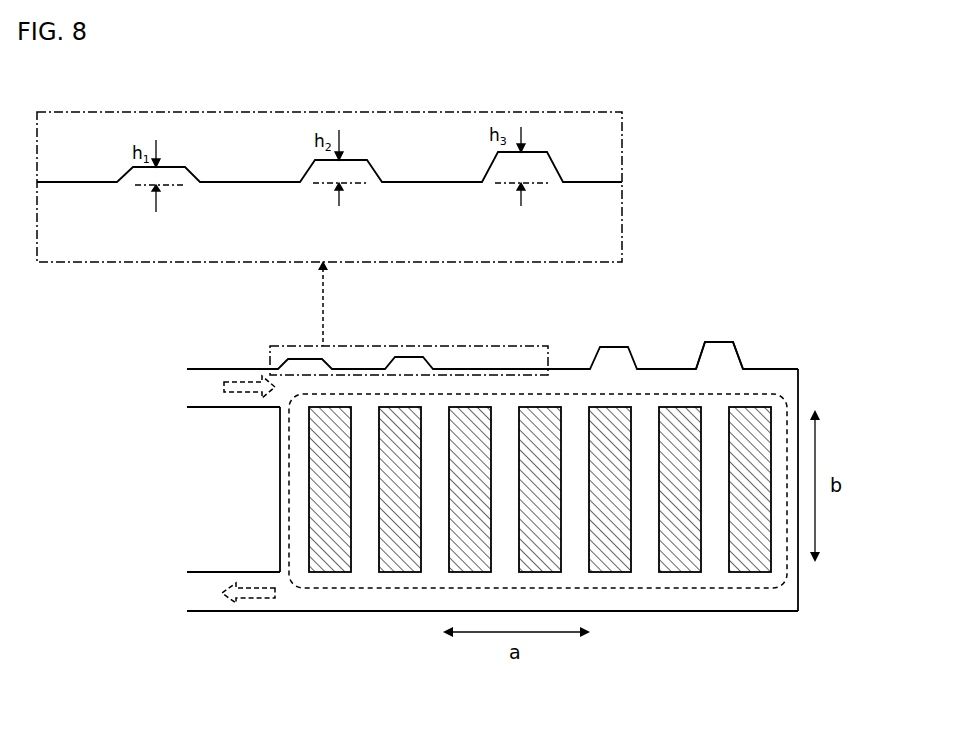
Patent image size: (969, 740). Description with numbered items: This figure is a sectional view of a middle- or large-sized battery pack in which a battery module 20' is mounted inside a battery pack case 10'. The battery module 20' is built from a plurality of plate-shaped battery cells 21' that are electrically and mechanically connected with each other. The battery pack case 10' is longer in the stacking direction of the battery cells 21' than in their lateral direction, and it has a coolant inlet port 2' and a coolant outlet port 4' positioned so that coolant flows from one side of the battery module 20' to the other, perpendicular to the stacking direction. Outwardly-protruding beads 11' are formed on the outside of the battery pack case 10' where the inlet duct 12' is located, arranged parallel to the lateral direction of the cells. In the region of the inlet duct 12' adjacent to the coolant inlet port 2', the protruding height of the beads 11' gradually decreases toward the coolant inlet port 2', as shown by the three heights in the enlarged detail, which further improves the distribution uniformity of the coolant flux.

The coolant inlet port 2' is at (219, 474).
The coolant outlet port 4' is at (219, 622).
The battery pack case 10' is at (492, 535).
The outwardly-protruding beads 11' is at (729, 327).
The inlet duct 12' is at (492, 333).
The battery module 20' is at (586, 450).
The plate-shaped battery cells 21' is at (571, 550).